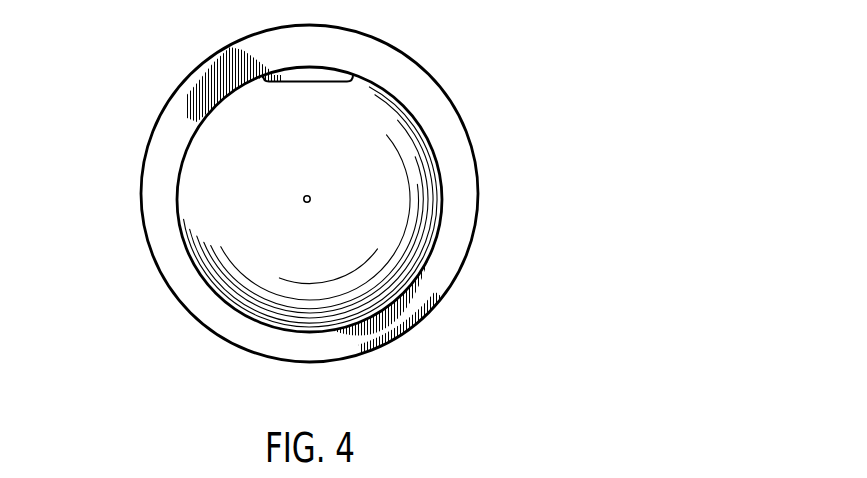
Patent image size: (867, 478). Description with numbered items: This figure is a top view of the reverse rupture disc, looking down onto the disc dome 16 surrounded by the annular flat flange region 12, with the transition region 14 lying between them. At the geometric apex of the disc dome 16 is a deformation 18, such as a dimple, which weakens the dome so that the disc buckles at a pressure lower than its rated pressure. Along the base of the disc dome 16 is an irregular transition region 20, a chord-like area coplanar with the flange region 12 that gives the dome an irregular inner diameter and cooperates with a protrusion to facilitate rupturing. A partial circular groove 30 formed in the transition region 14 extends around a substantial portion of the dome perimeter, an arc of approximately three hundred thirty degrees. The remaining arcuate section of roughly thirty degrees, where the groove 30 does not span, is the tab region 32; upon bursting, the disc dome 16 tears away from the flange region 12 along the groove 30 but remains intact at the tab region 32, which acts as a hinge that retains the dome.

The annular flat flange region 12 is at (162, 235).
The transition region 14 is at (441, 171).
The disc dome 16 is at (380, 122).
The deformation 18 is at (304, 197).
The irregular transition region 20 is at (308, 72).
The partial circular groove 30 is at (440, 233).
The tab region 32 is at (302, 333).